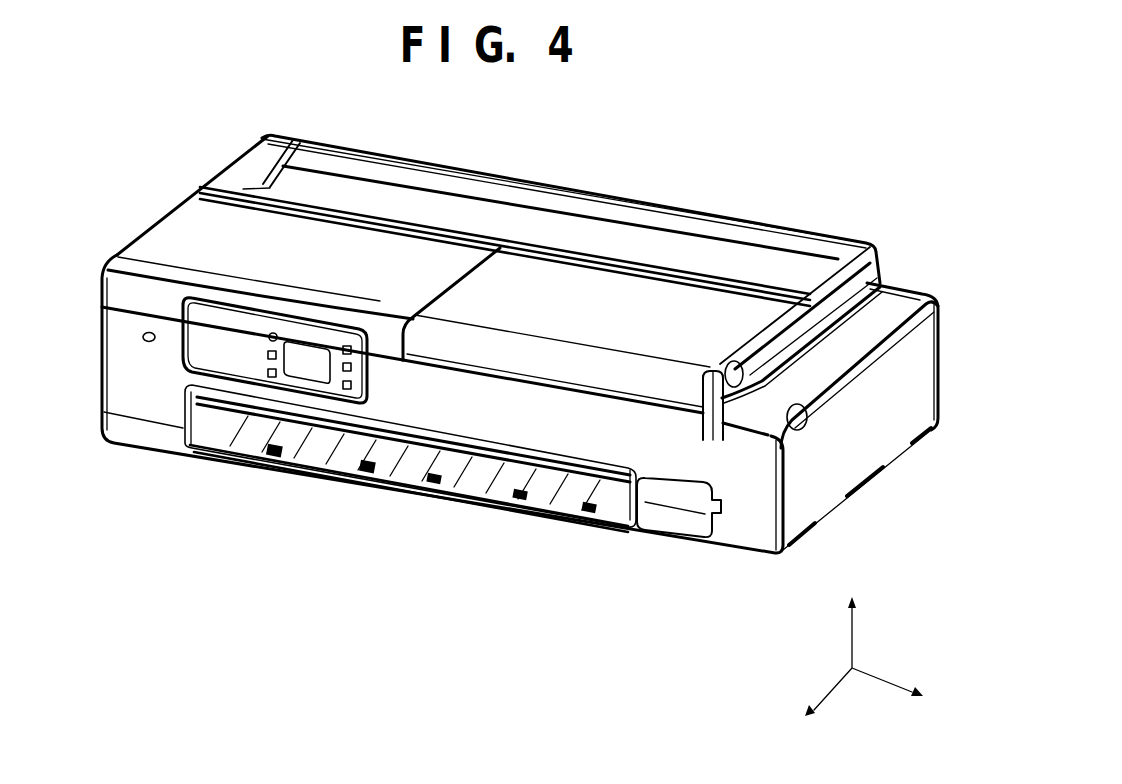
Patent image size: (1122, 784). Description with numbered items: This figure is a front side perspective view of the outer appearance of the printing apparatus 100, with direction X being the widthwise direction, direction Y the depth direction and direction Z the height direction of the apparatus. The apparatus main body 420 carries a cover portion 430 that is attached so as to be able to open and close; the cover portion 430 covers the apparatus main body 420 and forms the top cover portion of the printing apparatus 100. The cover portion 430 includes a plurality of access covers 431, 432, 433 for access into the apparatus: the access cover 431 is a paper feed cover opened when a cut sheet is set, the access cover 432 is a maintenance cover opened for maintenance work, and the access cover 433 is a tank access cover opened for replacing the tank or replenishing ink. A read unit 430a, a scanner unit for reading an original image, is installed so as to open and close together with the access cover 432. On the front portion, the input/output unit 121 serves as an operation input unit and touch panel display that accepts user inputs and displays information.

The printing apparatus 100 is at (128, 100).
The input/output unit 121 is at (247, 353).
The apparatus main body 420 is at (103, 358).
The cover portion 430 is at (158, 220).
The read unit 430a is at (265, 238).
The access cover 431 is at (558, 203).
The access cover 432 is at (618, 296).
The access cover 433 is at (886, 310).